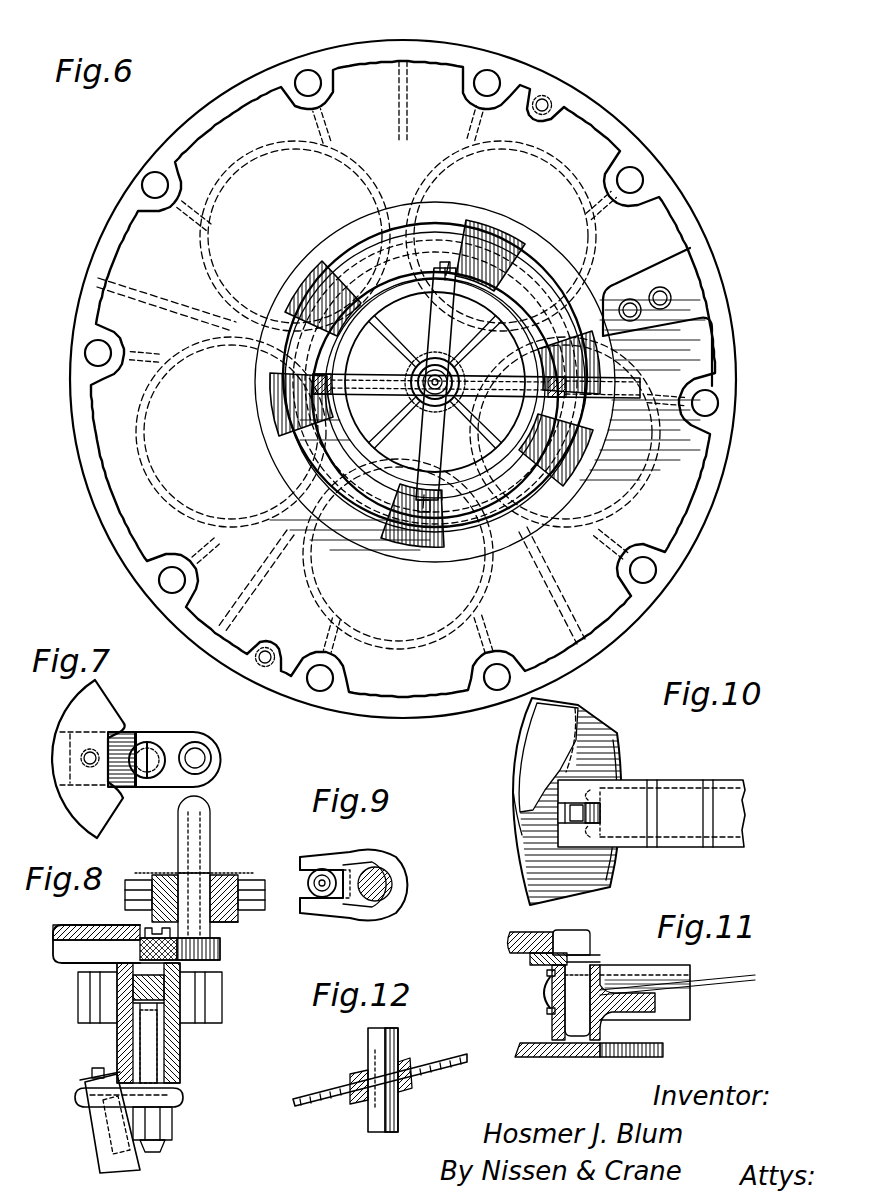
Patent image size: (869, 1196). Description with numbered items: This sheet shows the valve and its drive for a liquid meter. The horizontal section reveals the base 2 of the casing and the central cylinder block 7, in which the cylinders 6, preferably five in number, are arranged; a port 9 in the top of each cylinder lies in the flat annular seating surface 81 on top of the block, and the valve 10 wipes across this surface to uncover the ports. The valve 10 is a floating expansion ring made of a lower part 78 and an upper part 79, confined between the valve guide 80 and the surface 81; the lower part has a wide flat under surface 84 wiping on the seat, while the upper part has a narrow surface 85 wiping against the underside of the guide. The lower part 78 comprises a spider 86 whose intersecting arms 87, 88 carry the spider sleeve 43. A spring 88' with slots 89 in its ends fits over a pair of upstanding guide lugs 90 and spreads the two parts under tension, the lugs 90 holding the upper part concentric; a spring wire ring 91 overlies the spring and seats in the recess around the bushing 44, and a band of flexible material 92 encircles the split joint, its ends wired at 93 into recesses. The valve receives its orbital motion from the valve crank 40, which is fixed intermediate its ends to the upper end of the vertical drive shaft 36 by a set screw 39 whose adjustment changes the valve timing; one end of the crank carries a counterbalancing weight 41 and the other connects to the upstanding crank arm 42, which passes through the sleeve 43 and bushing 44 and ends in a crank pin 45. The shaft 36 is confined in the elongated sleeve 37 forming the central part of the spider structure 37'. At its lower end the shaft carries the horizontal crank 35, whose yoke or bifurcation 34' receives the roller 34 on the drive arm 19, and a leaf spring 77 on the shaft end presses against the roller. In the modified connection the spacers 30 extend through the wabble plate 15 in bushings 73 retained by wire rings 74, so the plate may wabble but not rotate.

In FIG. 6, the base 2 is at (692, 242).
In FIG. 6, the cylinders 6 is at (215, 250).
In FIG. 6, the cylinder block 7 is at (303, 550).
In FIG. 6, the port 9 is at (328, 247).
In FIG. 6, the valve 10 is at (592, 382).
In FIG. 10, the valve 10 is at (517, 782).
In FIG. 11, the valve 10 is at (552, 1025).
In FIG. 12, the wabble plate 15 is at (300, 1100).
In FIG. 8, the drive arm 19 is at (132, 1166).
In FIG. 9, the drive arm 19 is at (332, 870).
In FIG. 12, the spacers 30 is at (386, 1046).
In FIG. 8, the roller 34 is at (68, 1080).
In FIG. 9, the roller 34 is at (315, 908).
In FIG. 8, the yoke or bifurcation 34' is at (73, 1099).
In FIG. 9, the yoke or bifurcation 34' is at (317, 868).
In FIG. 8, the crank 35 is at (183, 1097).
In FIG. 9, the crank 35 is at (413, 897).
In FIG. 6, the drive shaft 36 is at (435, 382).
In FIG. 8, the drive shaft 36 is at (150, 1065).
In FIG. 9, the drive shaft 36 is at (385, 874).
In FIG. 8, the sleeve 37 is at (127, 1023).
In FIG. 6, the spider structure 37' is at (423, 350).
In FIG. 8, the spider structure 37' is at (172, 997).
In FIG. 7, the set screw 39 is at (160, 742).
In FIG. 8, the set screw 39 is at (143, 928).
In FIG. 7, the valve crank 40 is at (176, 742).
In FIG. 8, the valve crank 40 is at (221, 950).
In FIG. 6, the counterbalancing weight 41 is at (404, 366).
In FIG. 7, the counterbalancing weight 41 is at (70, 709).
In FIG. 8, the counterbalancing weight 41 is at (53, 931).
In FIG. 7, the crank arm 42 is at (197, 758).
In FIG. 8, the crank arm 42 is at (196, 884).
In FIG. 8, the spider sleeve 43 is at (238, 880).
In FIG. 8, the bushing 44 is at (215, 872).
In FIG. 6, the crank pin 45 is at (420, 482).
In FIG. 8, the crank pin 45 is at (208, 818).
In FIG. 12, the bushing 73 is at (412, 1068).
In FIG. 12, the wire rings 74 is at (412, 1084).
In FIG. 8, the leaf spring 77 is at (120, 1118).
In FIG. 9, the leaf spring 77 is at (335, 905).
In FIG. 10, the lower part of the valve 78 is at (522, 876).
In FIG. 11, the lower part of the valve 78 is at (560, 1057).
In FIG. 10, the upper part of the valve 79 is at (552, 729).
In FIG. 11, the upper part of the valve 79 is at (545, 963).
In FIG. 11, the valve guide 80 is at (515, 940).
In FIG. 6, the annular seating surface 81 is at (284, 279).
In FIG. 11, the under surface 84 is at (530, 1057).
In FIG. 11, the narrow surface 85 is at (556, 960).
In FIG. 8, the spider 86 is at (243, 920).
In FIG. 6, the arm 87 is at (436, 385).
In FIG. 11, the arm 87 is at (623, 1005).
In FIG. 6, the arm 88 is at (603, 422).
In FIG. 8, the arm 88 is at (211, 895).
In FIG. 10, the arm 88 is at (661, 840).
In FIG. 6, the spring 88' is at (476, 387).
In FIG. 10, the spring 88' is at (651, 792).
In FIG. 11, the spring 88' is at (677, 992).
In FIG. 10, the slots 89 is at (556, 812).
In FIG. 6, the guide lugs 90 is at (443, 266).
In FIG. 10, the guide lugs 90 is at (578, 812).
In FIG. 11, the guide lugs 90 is at (574, 985).
In FIG. 8, the spring wire ring 91 is at (170, 870).
In FIG. 11, the band of flexible material 92 is at (543, 999).
In FIG. 11, the wires 93 is at (547, 975).